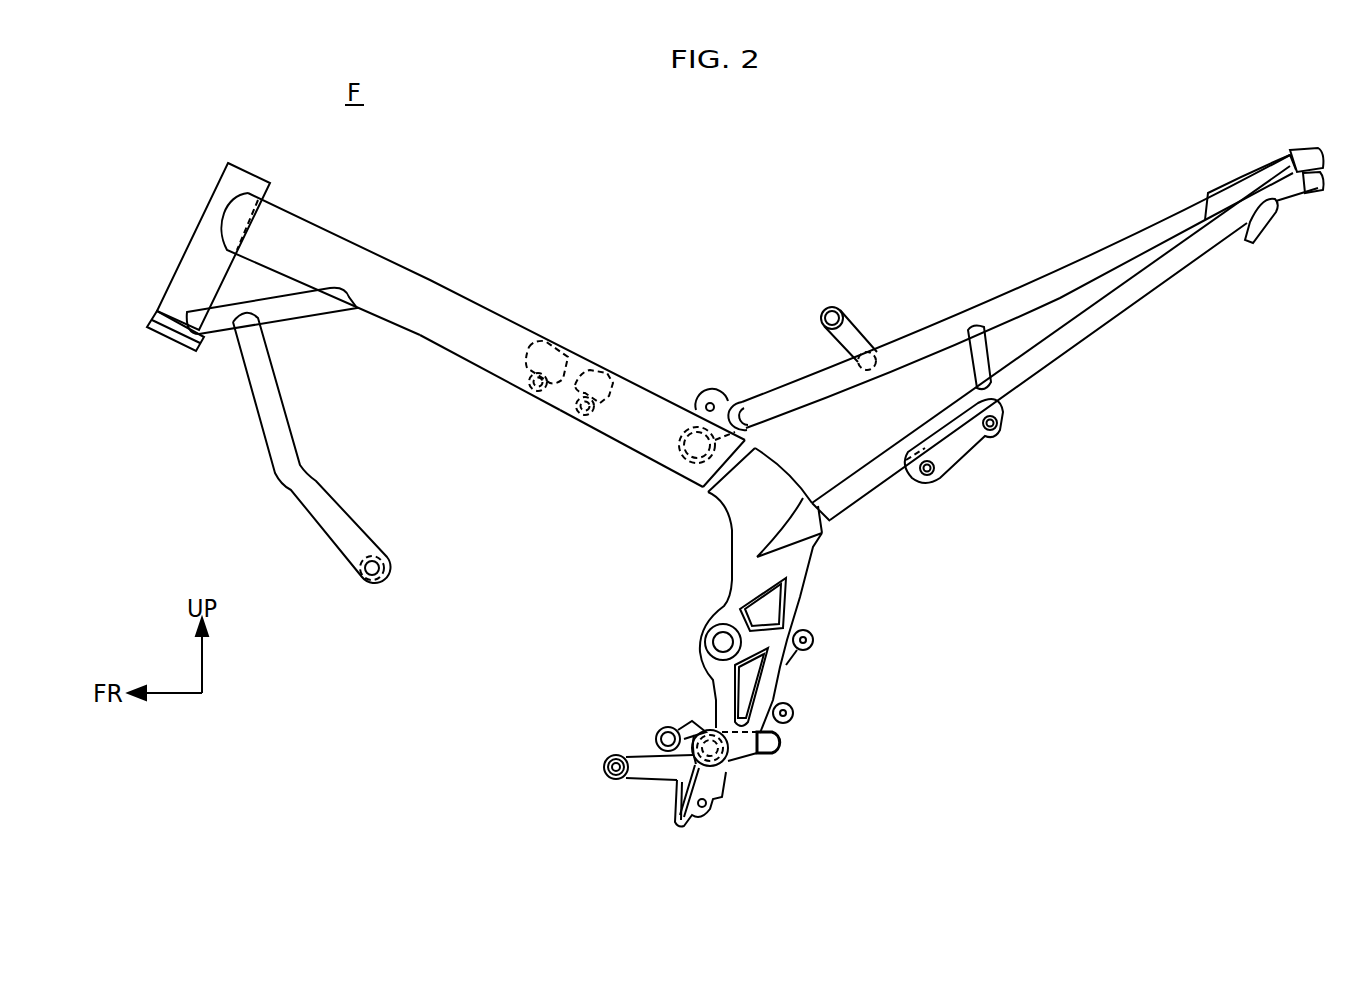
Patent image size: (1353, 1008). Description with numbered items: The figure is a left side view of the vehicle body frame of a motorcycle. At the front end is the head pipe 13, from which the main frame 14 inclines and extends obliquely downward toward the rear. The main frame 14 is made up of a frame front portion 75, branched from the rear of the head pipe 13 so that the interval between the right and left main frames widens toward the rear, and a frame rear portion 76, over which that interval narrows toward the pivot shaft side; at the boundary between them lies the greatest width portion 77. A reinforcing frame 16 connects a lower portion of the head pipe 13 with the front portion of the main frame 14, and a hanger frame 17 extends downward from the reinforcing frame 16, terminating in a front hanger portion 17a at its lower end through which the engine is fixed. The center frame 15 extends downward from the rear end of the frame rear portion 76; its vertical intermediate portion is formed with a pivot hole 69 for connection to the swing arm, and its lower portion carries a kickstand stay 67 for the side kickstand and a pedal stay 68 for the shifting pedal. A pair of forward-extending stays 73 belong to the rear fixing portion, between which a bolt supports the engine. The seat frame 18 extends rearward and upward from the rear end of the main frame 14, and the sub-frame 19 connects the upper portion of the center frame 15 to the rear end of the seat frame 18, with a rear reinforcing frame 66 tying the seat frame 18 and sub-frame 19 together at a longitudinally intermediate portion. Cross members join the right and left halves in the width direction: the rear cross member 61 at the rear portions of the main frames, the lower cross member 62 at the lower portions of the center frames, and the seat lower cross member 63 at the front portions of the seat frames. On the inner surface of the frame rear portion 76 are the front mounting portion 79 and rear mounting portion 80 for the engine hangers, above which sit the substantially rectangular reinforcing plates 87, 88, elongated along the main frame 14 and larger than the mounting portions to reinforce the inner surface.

The head pipe 13 is at (210, 212).
The main frame 14 is at (492, 306).
The center frame 15 is at (790, 608).
The reinforcing frame 16 is at (303, 313).
The hanger frame 17 is at (307, 481).
The front hanger portion 17a is at (363, 582).
The seat frame 18 is at (924, 333).
The sub-frame 19 is at (1073, 355).
The rear cross member 61 is at (680, 458).
The lower cross member 62 is at (740, 763).
The seat lower cross member 63 is at (887, 350).
The rear reinforcing frame 66 is at (976, 327).
The kickstand stay 67 is at (705, 820).
The pedal stay 68 is at (606, 766).
The pivot hole 69 is at (706, 633).
The stay 73 is at (658, 731).
The frame front portion 75 is at (328, 240).
The frame rear portion 76 is at (640, 392).
The greatest width portion 77 is at (437, 300).
The front mounting portion 79 is at (527, 392).
The rear mounting portion 80 is at (583, 413).
The reinforcing plate 87 is at (553, 347).
The reinforcing plate 88 is at (605, 372).